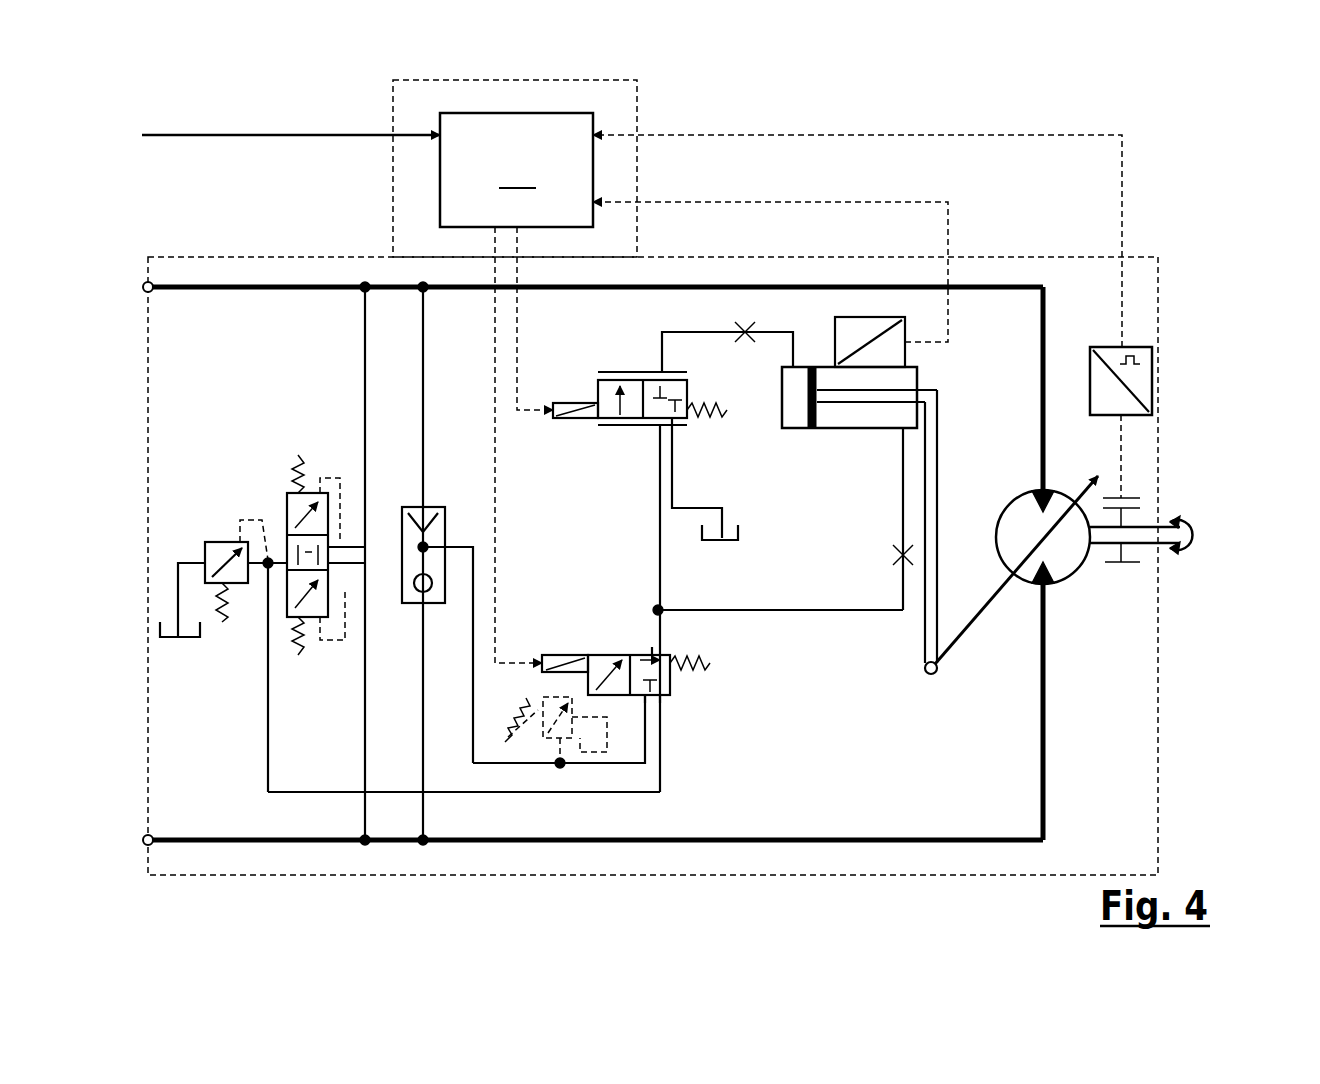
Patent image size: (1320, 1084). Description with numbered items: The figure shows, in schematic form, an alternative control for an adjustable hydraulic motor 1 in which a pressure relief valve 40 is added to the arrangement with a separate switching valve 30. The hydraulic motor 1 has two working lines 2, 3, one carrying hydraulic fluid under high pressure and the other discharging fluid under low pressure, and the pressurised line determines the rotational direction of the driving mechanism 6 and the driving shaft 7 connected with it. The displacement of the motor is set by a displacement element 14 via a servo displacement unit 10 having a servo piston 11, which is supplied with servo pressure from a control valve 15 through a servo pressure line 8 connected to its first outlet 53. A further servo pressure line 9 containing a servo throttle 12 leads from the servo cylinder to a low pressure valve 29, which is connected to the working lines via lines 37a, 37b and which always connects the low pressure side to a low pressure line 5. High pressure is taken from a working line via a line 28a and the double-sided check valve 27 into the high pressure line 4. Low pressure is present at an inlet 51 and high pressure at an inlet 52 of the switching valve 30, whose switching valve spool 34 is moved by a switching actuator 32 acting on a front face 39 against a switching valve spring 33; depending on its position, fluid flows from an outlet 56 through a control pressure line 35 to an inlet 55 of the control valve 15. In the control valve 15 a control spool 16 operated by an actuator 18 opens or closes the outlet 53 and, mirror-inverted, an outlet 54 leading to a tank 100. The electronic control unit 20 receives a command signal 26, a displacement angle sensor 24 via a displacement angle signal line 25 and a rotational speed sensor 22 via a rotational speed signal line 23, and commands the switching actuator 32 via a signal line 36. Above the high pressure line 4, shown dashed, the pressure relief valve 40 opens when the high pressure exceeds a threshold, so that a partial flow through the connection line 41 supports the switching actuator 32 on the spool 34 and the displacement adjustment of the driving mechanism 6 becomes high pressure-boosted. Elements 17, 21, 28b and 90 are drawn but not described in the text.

The hydraulic motor 1 is at (1150, 255).
The working line 2 is at (258, 293).
The working line 3 is at (208, 838).
The high pressure line 4 is at (590, 768).
The low pressure line 5 is at (648, 795).
The driving mechanism 6 is at (1065, 578).
The driving shaft 7 is at (1152, 527).
The servo pressure line 8 is at (700, 330).
The servo pressure line 9 is at (903, 478).
The servo displacement unit 10 is at (935, 375).
The servo piston 11 is at (812, 430).
The servo throttle 12 is at (900, 557).
The displacement element 14 is at (934, 675).
The control valve 15 is at (615, 365).
The control spool 16 is at (605, 425).
The spring 17 is at (700, 406).
The actuator 18 is at (565, 420).
The electronic control unit 20 is at (515, 168).
The control signal line 21 is at (520, 397).
The rotational speed sensor 22 is at (1152, 408).
The rotational speed signal line 23 is at (830, 134).
The displacement angle sensor 24 is at (872, 330).
The displacement angle signal line 25 is at (950, 225).
The command signal 26 is at (335, 140).
The double-sided check valve 27 is at (435, 515).
The line 28a is at (423, 377).
The connecting line 28b is at (423, 688).
The low pressure valve 29 is at (297, 550).
The switching valve 30 is at (715, 690).
The switching actuator 32 is at (552, 655).
The switching valve spring 33 is at (715, 668).
The switching valve spool 34 is at (645, 672).
The control pressure line 35 is at (662, 590).
The signal line 36 is at (495, 390).
The line 37a is at (366, 375).
The line 37b is at (364, 790).
The front face 39 is at (588, 660).
The pressure relief valve 40 is at (542, 755).
The connection line 41 is at (563, 683).
The inlet 51 is at (664, 697).
The inlet 52 is at (656, 700).
The first outlet 53 is at (665, 372).
The outlet 54 is at (685, 420).
The inlet 55 is at (662, 427).
The outlet 56 is at (661, 660).
The pressure limiting valve 90 is at (215, 543).
The tank 100 is at (197, 645).